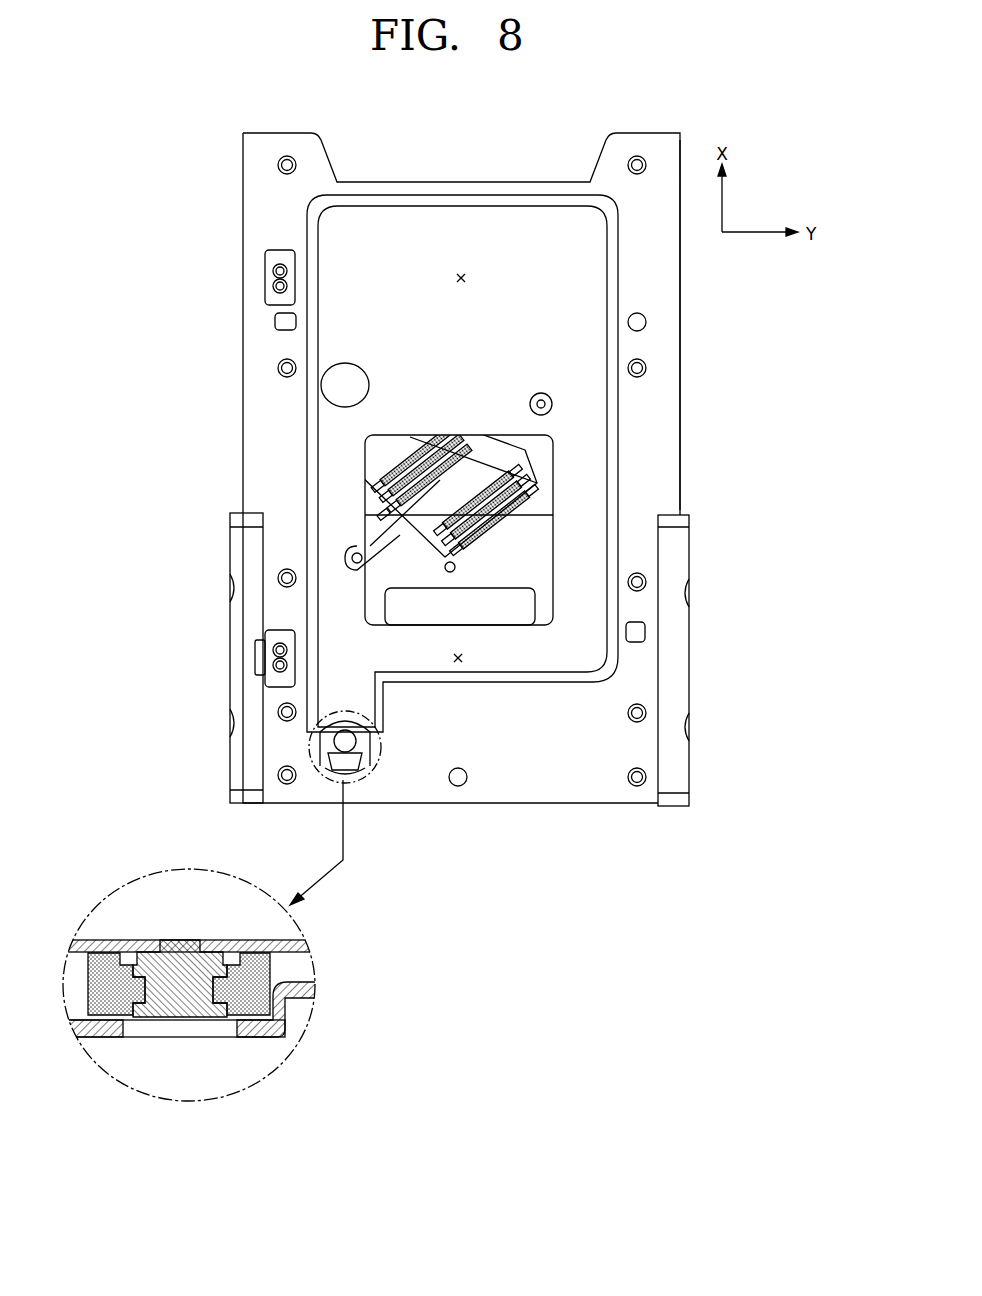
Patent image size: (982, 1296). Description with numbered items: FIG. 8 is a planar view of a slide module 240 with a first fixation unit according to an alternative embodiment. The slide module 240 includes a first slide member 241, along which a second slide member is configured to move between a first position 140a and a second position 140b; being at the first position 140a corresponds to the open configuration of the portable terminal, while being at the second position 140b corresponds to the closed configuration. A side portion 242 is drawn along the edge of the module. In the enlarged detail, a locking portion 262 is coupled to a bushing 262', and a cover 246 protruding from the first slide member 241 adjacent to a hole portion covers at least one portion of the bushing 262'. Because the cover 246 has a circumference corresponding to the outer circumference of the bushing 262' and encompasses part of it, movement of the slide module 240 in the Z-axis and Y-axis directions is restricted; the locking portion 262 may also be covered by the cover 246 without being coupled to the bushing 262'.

The slide module 240 is at (212, 145).
The first slide member 241 is at (668, 425).
The side bracket 242 is at (681, 658).
The first position 140a is at (458, 658).
The second position 140b is at (461, 278).
The cover 246 is at (355, 765).
The locking portion 262 is at (180, 1045).
The bushing 262' is at (242, 984).